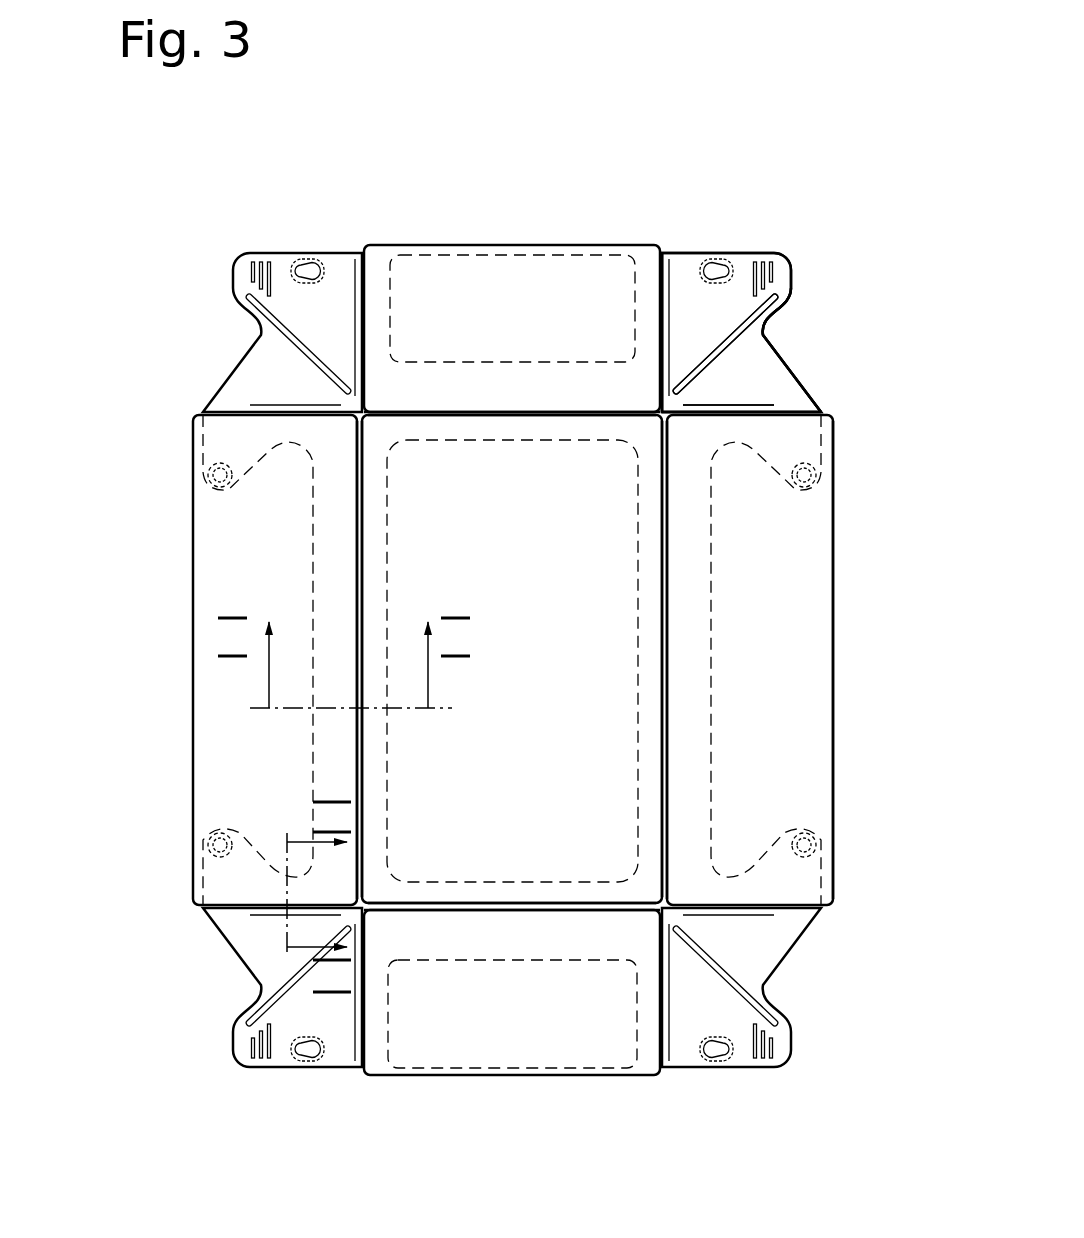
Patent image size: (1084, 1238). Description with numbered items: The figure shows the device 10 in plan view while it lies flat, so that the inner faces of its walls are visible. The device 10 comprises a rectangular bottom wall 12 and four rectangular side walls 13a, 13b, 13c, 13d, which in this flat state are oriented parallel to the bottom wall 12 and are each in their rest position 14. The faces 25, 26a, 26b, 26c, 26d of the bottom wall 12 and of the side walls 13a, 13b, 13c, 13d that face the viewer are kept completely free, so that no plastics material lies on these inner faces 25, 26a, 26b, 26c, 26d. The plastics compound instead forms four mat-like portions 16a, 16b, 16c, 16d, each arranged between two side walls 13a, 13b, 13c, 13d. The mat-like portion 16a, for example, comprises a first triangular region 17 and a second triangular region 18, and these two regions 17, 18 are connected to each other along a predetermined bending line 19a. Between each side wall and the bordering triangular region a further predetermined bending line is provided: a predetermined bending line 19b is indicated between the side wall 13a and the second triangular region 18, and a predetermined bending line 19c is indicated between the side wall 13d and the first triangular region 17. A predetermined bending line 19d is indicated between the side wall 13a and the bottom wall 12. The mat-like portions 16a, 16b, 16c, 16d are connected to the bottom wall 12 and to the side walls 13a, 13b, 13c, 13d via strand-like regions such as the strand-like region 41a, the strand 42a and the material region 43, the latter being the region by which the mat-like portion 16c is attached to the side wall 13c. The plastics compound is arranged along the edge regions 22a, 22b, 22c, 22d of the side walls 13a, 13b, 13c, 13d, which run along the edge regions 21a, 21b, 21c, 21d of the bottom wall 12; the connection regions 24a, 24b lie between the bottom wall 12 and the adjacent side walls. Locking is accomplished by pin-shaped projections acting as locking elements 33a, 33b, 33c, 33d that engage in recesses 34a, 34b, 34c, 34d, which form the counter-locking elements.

The device 10 is at (864, 122).
The bottom wall 12 is at (573, 472).
The side wall 13a is at (797, 725).
The side wall 13b is at (515, 1055).
The side wall 13c is at (225, 693).
The side wall 13d is at (487, 262).
The rest position 14 is at (850, 266).
The mat-like portion 16a is at (717, 312).
The mat-like portion 16b is at (755, 945).
The mat-like portion 16c is at (265, 943).
The mat-like portion 16d is at (268, 378).
The first triangular region 17 is at (720, 305).
The second triangular region 18 is at (760, 387).
The predetermined bending line 19a is at (725, 353).
The predetermined bending line 19b is at (790, 408).
The predetermined bending line 19c is at (663, 277).
The predetermined bending line 19d is at (668, 620).
The edge region of the bottom wall 21a is at (655, 740).
The edge region of the bottom wall 21b is at (580, 893).
The edge region of the bottom wall 21c is at (377, 562).
The edge region of the bottom wall 21d is at (552, 430).
The edge region of the side wall 22a is at (675, 660).
The edge region of the side wall 22b is at (422, 920).
The edge region of the side wall 22c is at (347, 605).
The edge region of the side wall 22d is at (413, 405).
The connection region 24a is at (667, 517).
The connection region 24b is at (352, 728).
The inner face of the bottom wall 25 is at (510, 528).
The inner face of the side wall 26a is at (725, 495).
The inner face of the side wall 26b is at (501, 1005).
The inner face of the side wall 26c is at (255, 505).
The inner face of the side wall 26d is at (433, 305).
The locking element 33a is at (812, 478).
The locking element 33b is at (816, 852).
The locking element 33c is at (207, 845).
The locking element 33d is at (208, 473).
The recess 34a is at (716, 262).
The recess 34b is at (716, 1062).
The recess 34c is at (308, 1062).
The recess 34d is at (308, 262).
The strand-like region 41a is at (363, 517).
The strand 42a is at (327, 725).
The material region 43 is at (275, 884).